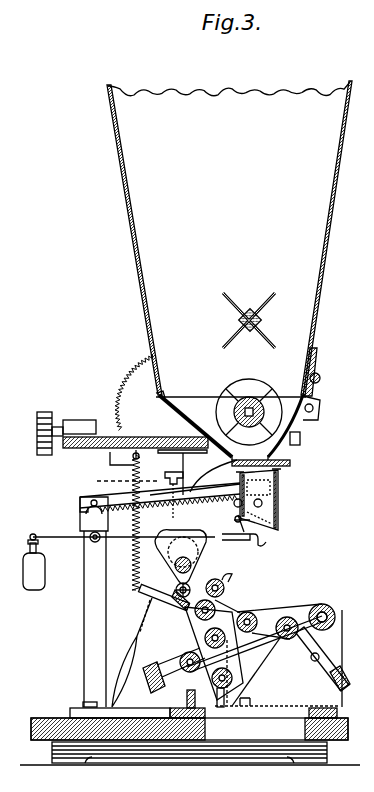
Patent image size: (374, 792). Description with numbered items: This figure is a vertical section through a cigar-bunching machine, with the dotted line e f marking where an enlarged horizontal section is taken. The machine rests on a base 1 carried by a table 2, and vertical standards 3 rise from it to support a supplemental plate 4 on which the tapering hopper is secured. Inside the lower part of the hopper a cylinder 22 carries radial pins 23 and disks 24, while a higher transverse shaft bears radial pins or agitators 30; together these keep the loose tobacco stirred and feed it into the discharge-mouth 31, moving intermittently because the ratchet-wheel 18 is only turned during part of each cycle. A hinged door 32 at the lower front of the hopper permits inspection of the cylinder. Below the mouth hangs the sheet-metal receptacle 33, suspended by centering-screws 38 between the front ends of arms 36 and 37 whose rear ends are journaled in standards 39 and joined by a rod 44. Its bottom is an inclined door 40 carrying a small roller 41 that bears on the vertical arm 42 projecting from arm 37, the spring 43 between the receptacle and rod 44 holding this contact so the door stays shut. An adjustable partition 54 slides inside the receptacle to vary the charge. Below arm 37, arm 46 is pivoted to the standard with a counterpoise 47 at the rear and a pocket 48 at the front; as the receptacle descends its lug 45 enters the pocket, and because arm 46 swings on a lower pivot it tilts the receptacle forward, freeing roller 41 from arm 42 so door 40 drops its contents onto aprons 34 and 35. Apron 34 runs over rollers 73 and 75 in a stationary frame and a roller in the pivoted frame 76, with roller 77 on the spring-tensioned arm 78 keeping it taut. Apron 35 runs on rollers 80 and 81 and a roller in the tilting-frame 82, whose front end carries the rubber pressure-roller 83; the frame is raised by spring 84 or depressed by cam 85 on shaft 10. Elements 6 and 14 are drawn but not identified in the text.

The base 1 is at (189, 715).
The table 2 is at (190, 760).
The vertical standards 3 is at (158, 485).
The supplemental plate 4 is at (122, 435).
The link 6 is at (227, 611).
The shaft 10 is at (180, 563).
The roller 14 is at (235, 619).
The ratchet-wheel 18 is at (134, 392).
The cylinder 22 is at (249, 412).
The radial pins 23 is at (249, 409).
The plates or disks 24 is at (258, 368).
The radial pins or agitators 30 is at (252, 313).
The discharge-mouth 31 is at (250, 456).
The hinged door 32 is at (300, 428).
The receptacle 33 is at (265, 499).
The apron 34 is at (254, 644).
The apron 35 is at (207, 653).
The arm 36 is at (264, 504).
The arm 37 is at (195, 489).
The centering-screws 38 is at (258, 484).
The standards 39 is at (94, 602).
The inclined door 40 is at (280, 533).
The roller 41 is at (261, 467).
The vertical arm 42 is at (236, 523).
The spring 43 is at (213, 506).
The rod 44 is at (100, 493).
The lug 45 is at (260, 518).
The arm 46 is at (122, 542).
The counterpoise 47 is at (34, 565).
The pocket or recess 48 is at (245, 544).
The vertical transverse partition 54 is at (136, 570).
The roller 73 is at (325, 612).
The roller 75 is at (226, 685).
The pivotally-secured frame 76 is at (220, 658).
The roller 77 is at (312, 659).
The pivotally-secured arm 78 is at (334, 677).
The roller 80 is at (182, 659).
The roller 81 is at (212, 644).
The tilting-frame 82 is at (164, 597).
The rubber pressure-roller 83 is at (223, 585).
The spring 84 is at (215, 609).
The cam 85 is at (180, 552).
The dotted line e f e is at (123, 482).
The dotted line e f is at (213, 476).